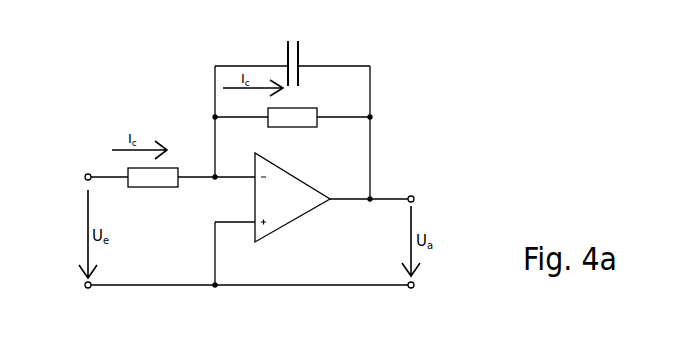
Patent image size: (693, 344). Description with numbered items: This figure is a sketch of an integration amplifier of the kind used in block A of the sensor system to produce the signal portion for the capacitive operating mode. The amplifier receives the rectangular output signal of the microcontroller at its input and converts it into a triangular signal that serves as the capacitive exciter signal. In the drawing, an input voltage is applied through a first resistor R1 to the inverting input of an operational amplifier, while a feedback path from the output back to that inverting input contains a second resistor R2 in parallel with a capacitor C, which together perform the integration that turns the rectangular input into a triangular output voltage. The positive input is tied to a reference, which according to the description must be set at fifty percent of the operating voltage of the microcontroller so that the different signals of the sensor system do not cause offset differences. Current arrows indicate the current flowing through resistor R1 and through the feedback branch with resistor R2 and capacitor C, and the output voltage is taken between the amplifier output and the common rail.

The input resistor R1 is at (153, 185).
The feedback resistor R2 is at (292, 126).
The feedback capacitor C is at (300, 66).